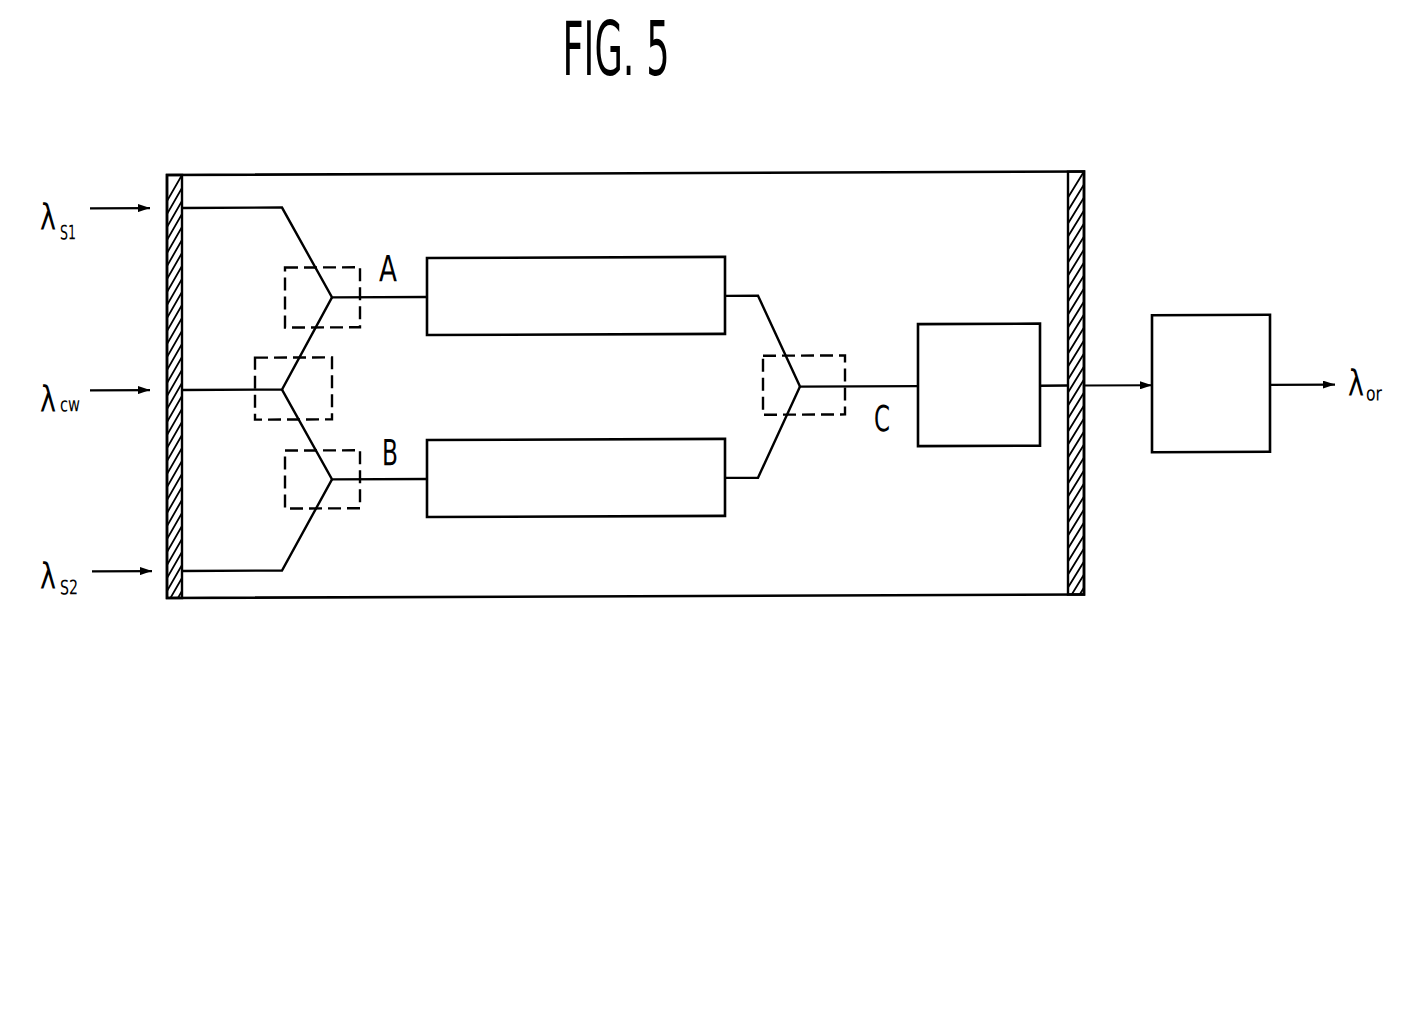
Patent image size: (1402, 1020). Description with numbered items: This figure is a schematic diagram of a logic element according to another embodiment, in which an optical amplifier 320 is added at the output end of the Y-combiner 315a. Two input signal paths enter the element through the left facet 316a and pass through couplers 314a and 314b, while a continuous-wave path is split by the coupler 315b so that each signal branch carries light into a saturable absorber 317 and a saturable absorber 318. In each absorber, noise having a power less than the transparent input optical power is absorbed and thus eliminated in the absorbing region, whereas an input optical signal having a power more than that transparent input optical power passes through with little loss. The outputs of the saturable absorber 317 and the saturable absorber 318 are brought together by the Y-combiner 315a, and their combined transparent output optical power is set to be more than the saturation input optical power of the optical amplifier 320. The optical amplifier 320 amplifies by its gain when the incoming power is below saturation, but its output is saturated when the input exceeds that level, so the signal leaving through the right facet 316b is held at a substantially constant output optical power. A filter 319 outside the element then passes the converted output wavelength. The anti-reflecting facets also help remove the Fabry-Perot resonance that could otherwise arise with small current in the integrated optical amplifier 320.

The Y-combiner 314a is at (285, 297).
The second optical coupler 314b is at (285, 479).
The Y-combiner 315a is at (798, 358).
The splitter coupler 315b is at (332, 388).
The first facet (mirror) 316a is at (180, 598).
The second facet (mirror) 316b is at (1080, 598).
The saturable absorber 317 is at (505, 259).
The saturable absorber 318 is at (498, 441).
The filter 319 is at (1185, 327).
The optical amplifier 320 is at (970, 327).